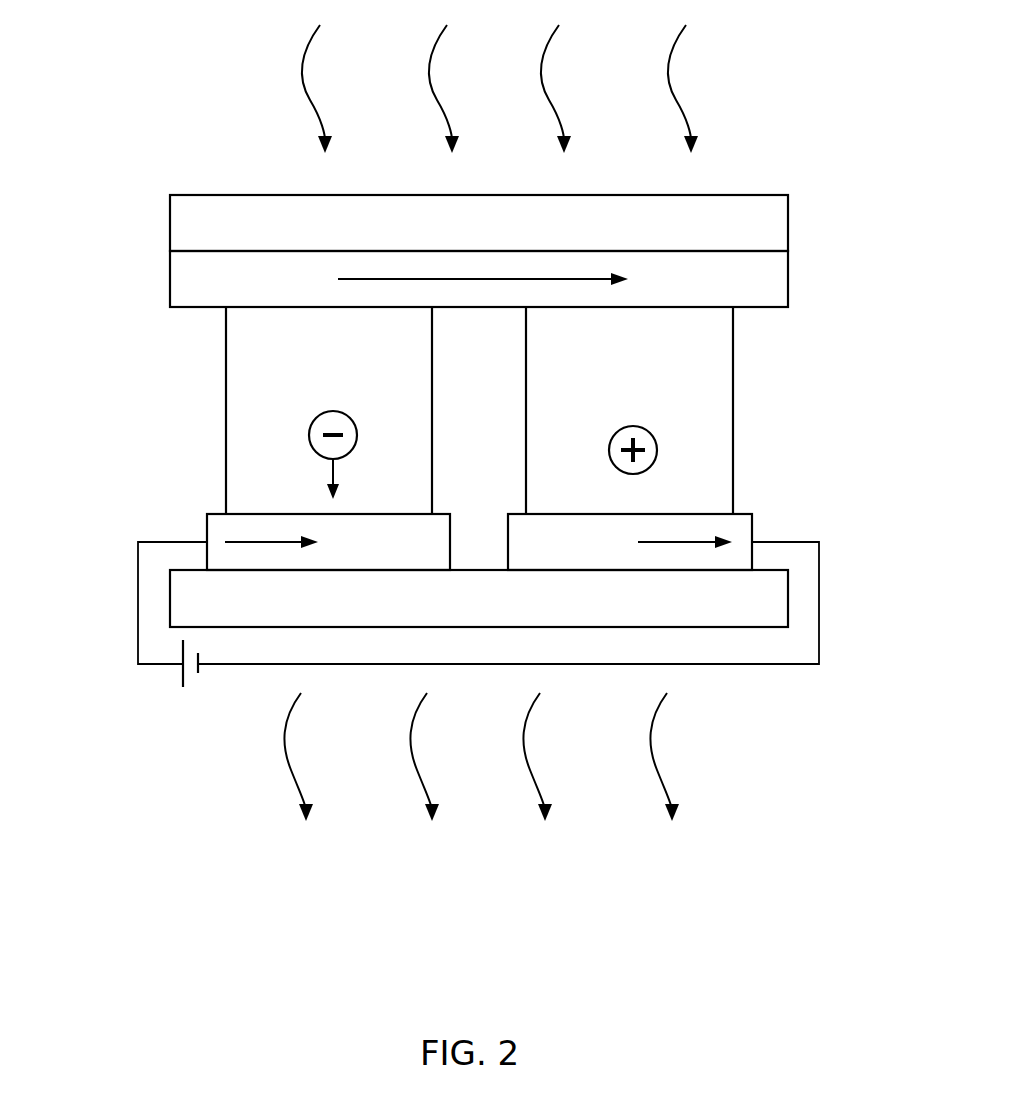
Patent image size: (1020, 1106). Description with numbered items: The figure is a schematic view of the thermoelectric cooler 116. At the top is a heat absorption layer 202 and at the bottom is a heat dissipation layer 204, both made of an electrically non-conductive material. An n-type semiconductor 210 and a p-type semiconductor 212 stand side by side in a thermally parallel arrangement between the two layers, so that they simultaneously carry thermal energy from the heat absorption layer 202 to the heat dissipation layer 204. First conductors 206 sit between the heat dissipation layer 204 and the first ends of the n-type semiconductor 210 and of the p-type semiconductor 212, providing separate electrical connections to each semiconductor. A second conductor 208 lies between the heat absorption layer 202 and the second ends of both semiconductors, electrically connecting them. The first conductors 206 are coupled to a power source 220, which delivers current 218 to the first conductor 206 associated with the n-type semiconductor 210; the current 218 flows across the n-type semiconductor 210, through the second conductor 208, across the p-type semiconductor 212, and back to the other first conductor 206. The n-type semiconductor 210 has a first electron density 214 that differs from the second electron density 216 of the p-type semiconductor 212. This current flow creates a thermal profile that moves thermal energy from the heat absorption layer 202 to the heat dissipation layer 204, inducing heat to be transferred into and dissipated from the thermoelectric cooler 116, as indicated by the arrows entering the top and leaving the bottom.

The thermoelectric cooler 116 is at (147, 133).
The heat absorption layer 202 is at (788, 223).
The heat dissipation layer 204 is at (788, 598).
The first conductors 206 is at (207, 518).
The second conductor 208 is at (788, 280).
The n-type semiconductor 210 is at (226, 368).
The p-type semiconductor 212 is at (733, 345).
The first electron density 214 is at (309, 435).
The second electron density 216 is at (657, 450).
The current 218 is at (225, 542).
The power source 220 is at (185, 704).